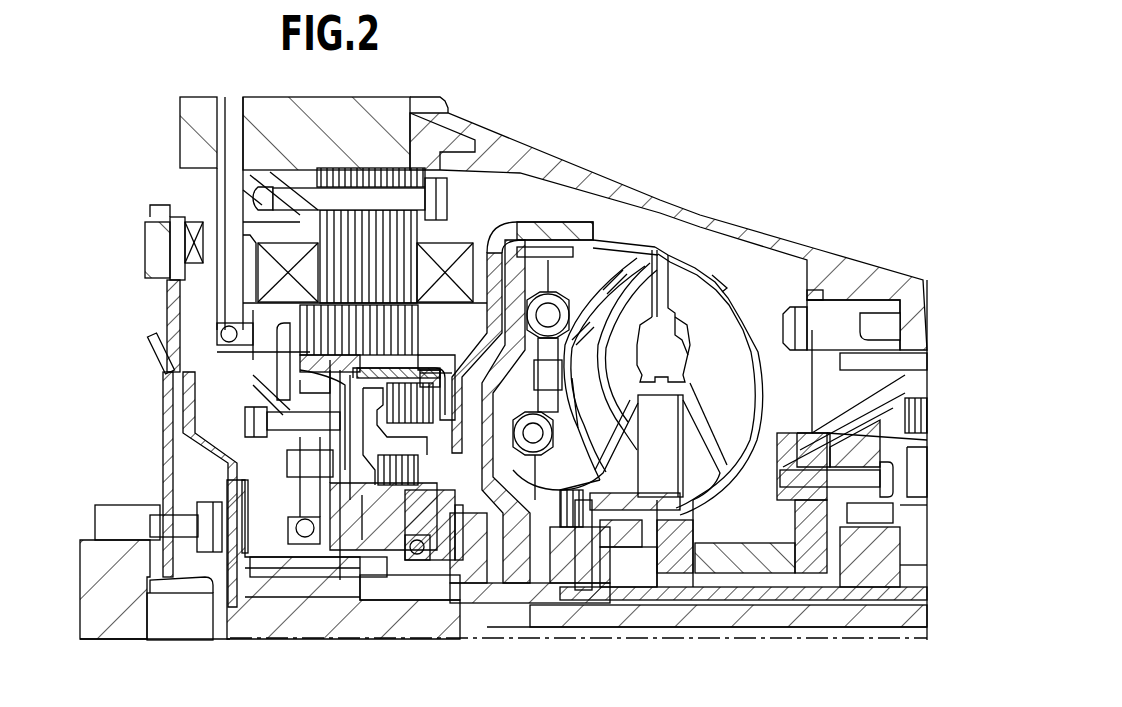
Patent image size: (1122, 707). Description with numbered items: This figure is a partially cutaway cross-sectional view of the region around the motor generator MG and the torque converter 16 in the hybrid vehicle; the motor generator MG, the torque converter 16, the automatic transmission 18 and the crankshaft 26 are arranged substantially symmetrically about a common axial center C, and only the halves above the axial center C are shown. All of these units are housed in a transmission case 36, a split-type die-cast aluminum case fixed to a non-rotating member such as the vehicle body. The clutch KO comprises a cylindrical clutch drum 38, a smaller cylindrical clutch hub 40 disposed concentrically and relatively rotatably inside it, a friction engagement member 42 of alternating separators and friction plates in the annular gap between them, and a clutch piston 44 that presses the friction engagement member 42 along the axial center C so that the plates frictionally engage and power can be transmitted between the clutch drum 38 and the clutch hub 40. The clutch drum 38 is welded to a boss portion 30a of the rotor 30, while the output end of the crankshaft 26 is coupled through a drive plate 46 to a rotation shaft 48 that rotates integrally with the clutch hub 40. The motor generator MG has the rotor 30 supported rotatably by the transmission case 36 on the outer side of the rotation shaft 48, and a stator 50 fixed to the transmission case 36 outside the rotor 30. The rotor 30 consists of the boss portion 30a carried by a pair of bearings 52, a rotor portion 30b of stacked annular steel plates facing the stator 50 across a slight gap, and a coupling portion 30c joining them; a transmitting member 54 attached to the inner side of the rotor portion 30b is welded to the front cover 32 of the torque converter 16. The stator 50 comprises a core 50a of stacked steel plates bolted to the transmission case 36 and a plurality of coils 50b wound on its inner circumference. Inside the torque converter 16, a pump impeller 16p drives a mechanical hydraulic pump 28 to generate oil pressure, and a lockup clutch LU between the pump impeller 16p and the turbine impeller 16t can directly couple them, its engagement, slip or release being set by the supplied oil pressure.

The torque converter 16 is at (712, 258).
The turbine impeller 16t is at (628, 258).
The pump impeller 16p is at (717, 300).
The automatic transmission 18 is at (876, 298).
The crankshaft 26 is at (79, 542).
The mechanical hydraulic pump 28 is at (837, 567).
The rotor 30 is at (290, 308).
The boss portion 30a is at (397, 530).
The rotor portion 30b is at (175, 358).
The coupling portion 30c is at (340, 422).
The front cover 32 is at (507, 585).
The transmission case 36 is at (182, 134).
The clutch drum 38 is at (438, 367).
The clutch hub 40 is at (432, 472).
The friction engagement member 42 is at (445, 418).
The clutch piston 44 is at (337, 602).
The drive plate 46 is at (167, 451).
The rotation shaft 48 is at (300, 632).
The stator 50 is at (347, 170).
The core 50a is at (263, 213).
The coils 50b is at (265, 267).
The bearings 52 is at (300, 545).
The transmitting member 54 is at (457, 370).
The motor generator MG is at (455, 225).
The clutch K0 KO is at (350, 393).
The lockup clutch LU is at (480, 247).
The axial center C is at (160, 643).